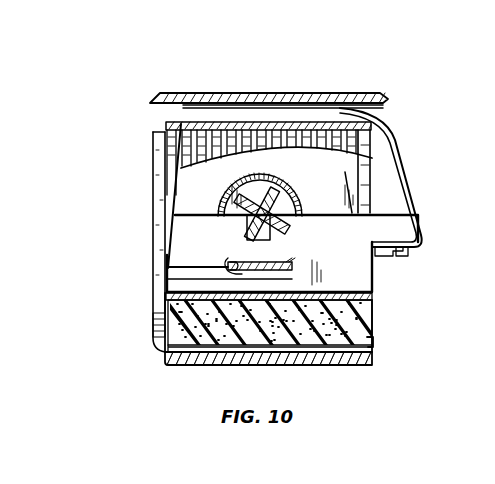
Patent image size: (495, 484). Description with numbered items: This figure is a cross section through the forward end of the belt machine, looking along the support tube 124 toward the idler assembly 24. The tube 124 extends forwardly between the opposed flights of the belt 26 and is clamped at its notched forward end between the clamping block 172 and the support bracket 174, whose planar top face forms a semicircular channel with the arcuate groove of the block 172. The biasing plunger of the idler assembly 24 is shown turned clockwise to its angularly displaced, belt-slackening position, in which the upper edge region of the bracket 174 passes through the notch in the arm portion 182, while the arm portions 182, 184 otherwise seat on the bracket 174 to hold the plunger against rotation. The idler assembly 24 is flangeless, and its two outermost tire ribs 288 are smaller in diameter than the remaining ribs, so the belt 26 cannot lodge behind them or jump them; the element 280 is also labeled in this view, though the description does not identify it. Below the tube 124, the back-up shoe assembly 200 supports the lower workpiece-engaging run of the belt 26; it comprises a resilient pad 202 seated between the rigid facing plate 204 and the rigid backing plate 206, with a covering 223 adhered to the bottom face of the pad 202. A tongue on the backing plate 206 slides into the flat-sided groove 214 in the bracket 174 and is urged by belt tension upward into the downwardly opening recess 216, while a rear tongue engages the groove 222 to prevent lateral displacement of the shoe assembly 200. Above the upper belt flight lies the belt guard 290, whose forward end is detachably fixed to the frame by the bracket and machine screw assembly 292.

The idler assembly 24 is at (143, 162).
The belt 26 is at (215, 123).
The support tube 124 is at (280, 183).
The clamping block 172 is at (173, 193).
The support bracket 174 is at (168, 246).
The arm portion 182 is at (280, 227).
The arm portion 184 is at (250, 208).
The back-up shoe assembly 200 is at (397, 312).
The resilient pad 202 is at (342, 323).
The facing plate 204 is at (374, 347).
The backing plate 206 is at (375, 300).
The groove 214 is at (175, 285).
The recess 216 is at (292, 265).
The groove 222 is at (227, 266).
The covering 223 is at (165, 343).
The top plate 280 is at (165, 126).
The outermost tire ribs 288 is at (152, 147).
The belt guard 290 is at (312, 93).
The bracket and machine screw assembly 292 is at (400, 146).